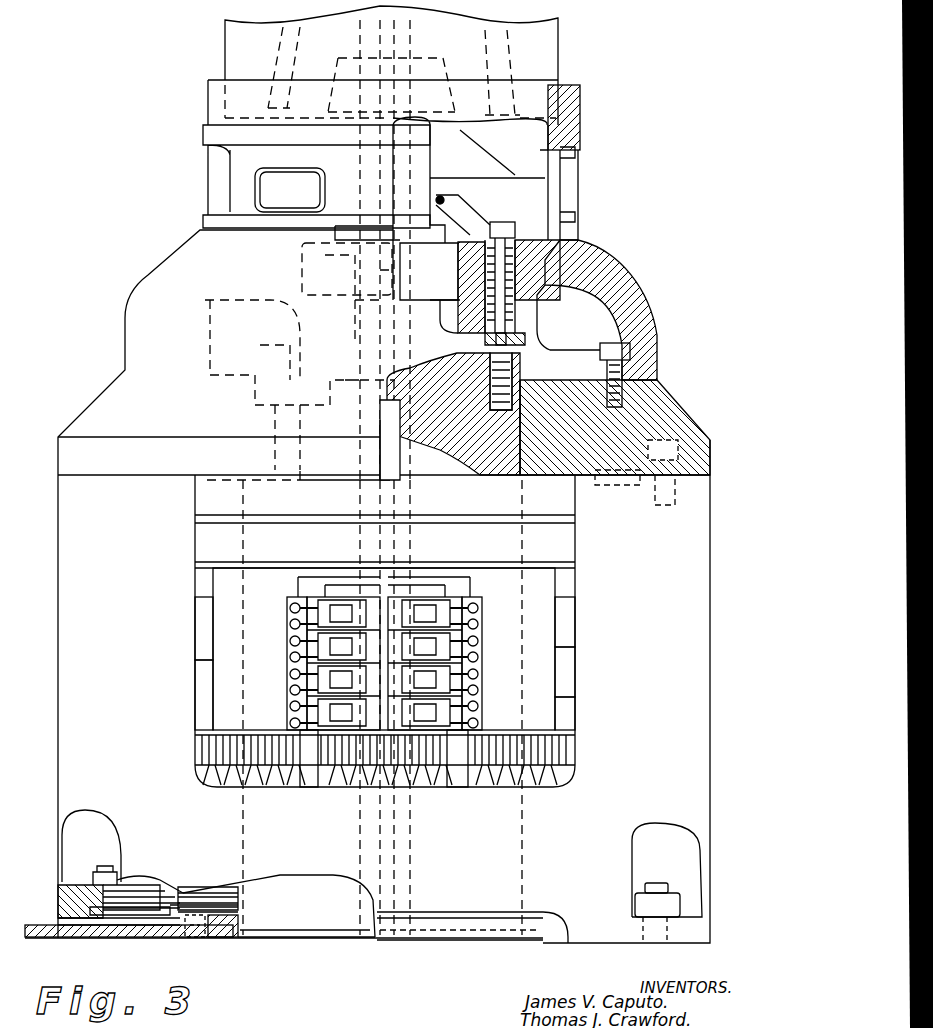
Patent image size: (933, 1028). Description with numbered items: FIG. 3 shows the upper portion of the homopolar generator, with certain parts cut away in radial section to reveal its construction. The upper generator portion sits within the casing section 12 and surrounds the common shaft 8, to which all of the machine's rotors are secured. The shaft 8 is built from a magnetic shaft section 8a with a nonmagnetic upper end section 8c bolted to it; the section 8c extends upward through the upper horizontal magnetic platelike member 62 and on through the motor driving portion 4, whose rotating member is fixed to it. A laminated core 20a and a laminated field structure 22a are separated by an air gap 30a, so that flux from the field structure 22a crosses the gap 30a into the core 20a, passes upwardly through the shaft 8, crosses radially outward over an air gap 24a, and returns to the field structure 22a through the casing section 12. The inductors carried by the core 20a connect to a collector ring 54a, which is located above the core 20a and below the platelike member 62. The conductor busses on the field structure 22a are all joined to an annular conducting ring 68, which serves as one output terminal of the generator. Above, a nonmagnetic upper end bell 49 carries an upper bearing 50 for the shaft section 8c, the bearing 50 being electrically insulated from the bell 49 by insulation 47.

The motor driving portion 4 is at (565, 47).
The common shaft 8 is at (326, 927).
The shaft section 8a is at (300, 922).
The upper end section 8c is at (520, 357).
The casing section 12 is at (697, 598).
The laminated core 20a is at (237, 905).
The laminated field structure 22a is at (135, 884).
The air gap 24a is at (518, 442).
The air gap 30a is at (183, 900).
The insulation 47 is at (505, 237).
The upper end bell 49 is at (640, 312).
The upper bearing 50 is at (450, 250).
The collector ring 54a is at (525, 690).
The upper horizontal magnetic platelike member 62 is at (680, 410).
The annular conducting ring 68 is at (82, 937).